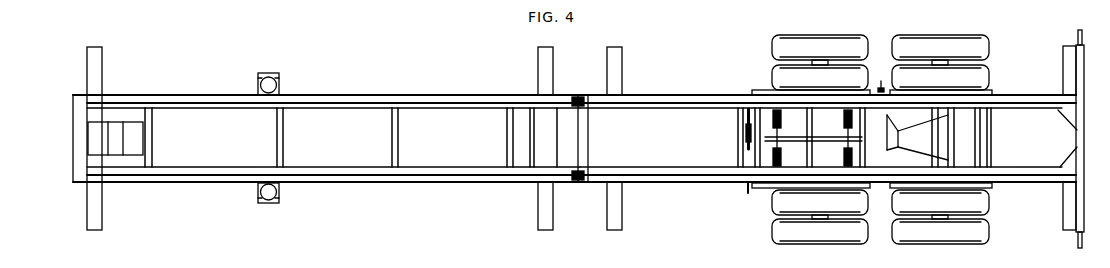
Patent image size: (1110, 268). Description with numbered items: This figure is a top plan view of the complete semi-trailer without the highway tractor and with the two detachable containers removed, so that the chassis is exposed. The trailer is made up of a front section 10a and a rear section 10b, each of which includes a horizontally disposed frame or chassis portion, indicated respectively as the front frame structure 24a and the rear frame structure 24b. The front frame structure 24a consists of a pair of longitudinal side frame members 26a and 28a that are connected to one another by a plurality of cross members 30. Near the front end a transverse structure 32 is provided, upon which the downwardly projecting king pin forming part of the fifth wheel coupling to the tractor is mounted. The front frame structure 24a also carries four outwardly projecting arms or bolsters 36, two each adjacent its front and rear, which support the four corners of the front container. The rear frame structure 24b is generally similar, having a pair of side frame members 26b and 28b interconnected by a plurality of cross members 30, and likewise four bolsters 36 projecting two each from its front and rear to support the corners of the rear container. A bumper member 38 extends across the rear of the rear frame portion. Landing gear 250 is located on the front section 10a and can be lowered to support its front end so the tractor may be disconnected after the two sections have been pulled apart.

The front section 10a is at (351, 148).
The rear section 10b is at (667, 148).
The front frame structure 24a is at (463, 189).
The rear frame structure 24b is at (688, 189).
The longitudinal side frame member 26a is at (363, 183).
The side frame member 26b is at (730, 183).
The longitudinal side frame member 28a is at (356, 95).
The side frame member 28b is at (710, 95).
The cross members 30 is at (153, 142).
The transverse structure 32 is at (96, 138).
The bolsters 36 is at (97, 70).
The bumper member 38 is at (1080, 135).
The landing gear 250 is at (258, 85).